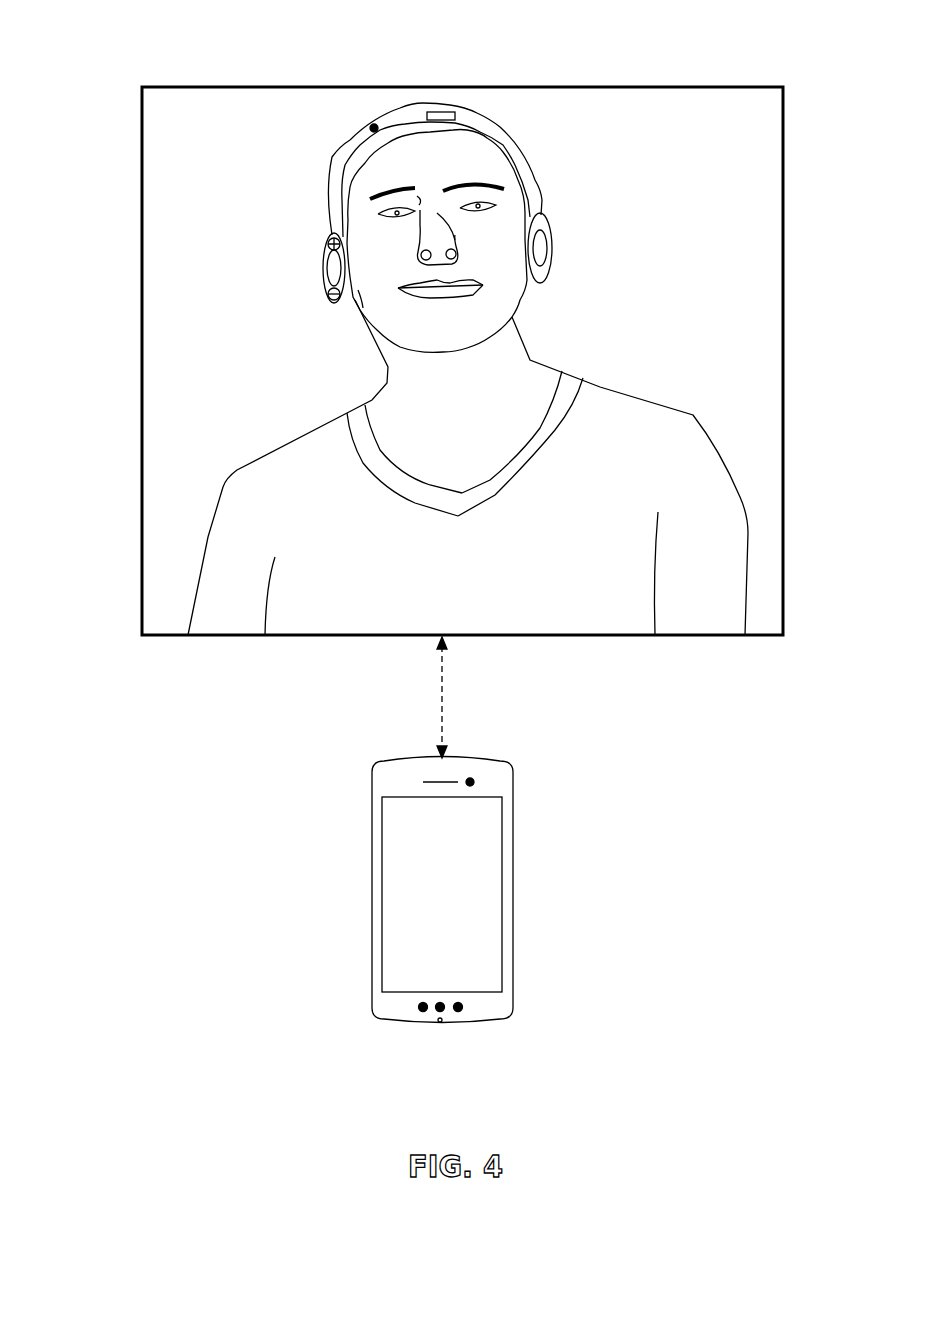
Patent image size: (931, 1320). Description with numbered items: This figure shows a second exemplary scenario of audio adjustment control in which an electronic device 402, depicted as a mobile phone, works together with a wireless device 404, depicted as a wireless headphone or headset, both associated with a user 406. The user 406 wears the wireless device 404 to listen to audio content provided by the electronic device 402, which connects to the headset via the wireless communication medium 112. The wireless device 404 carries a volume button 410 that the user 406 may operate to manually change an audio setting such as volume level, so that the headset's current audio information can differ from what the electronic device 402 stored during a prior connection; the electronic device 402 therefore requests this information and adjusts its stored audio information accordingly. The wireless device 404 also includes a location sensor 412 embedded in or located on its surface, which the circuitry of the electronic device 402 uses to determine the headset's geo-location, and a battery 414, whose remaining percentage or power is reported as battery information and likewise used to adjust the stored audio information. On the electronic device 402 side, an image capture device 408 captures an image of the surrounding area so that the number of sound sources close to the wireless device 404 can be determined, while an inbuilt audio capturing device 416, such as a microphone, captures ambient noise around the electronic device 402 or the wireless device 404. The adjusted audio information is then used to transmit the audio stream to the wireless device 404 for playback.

The wireless communication medium 112 is at (442, 708).
The electronic device 402 is at (512, 900).
The wireless device 404 is at (335, 153).
The user 406 is at (738, 495).
The image capture device 408 is at (473, 779).
The volume button 410 is at (327, 293).
The location sensor 412 is at (375, 124).
The battery 414 is at (450, 110).
The inbuilt audio capturing device 416 is at (439, 1022).